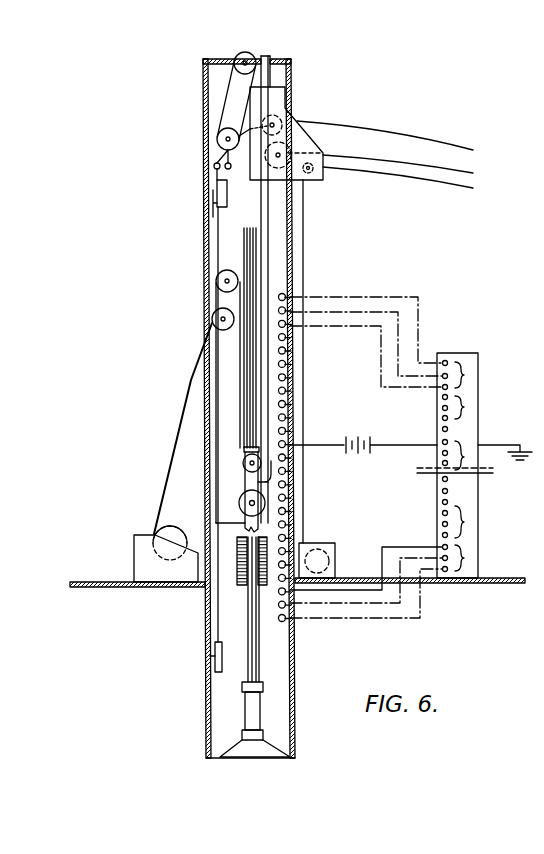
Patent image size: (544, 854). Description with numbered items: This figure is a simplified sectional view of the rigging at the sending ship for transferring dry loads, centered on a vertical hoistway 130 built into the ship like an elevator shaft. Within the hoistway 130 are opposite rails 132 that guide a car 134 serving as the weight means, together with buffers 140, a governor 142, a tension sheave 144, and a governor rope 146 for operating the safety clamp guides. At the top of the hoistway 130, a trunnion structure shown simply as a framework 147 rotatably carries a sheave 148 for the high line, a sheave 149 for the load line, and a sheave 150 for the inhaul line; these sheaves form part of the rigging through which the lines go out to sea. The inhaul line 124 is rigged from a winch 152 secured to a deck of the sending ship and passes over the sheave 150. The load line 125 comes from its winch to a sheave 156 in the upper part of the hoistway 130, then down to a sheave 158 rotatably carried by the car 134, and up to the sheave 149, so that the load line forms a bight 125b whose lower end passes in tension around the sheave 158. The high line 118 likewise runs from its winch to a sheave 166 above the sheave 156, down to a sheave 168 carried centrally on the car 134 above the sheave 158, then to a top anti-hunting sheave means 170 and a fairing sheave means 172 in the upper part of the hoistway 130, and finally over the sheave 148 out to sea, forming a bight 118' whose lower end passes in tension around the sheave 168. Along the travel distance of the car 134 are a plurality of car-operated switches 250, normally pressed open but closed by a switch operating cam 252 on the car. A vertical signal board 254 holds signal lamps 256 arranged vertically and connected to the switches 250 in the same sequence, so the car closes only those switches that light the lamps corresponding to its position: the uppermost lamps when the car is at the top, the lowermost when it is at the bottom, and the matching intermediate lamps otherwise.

The high line 118 is at (385, 131).
The bight of the high line 118' is at (206, 370).
The inhaul line 124 is at (436, 185).
The load line 125 is at (433, 171).
The bight of the load line 125b is at (304, 231).
The hoistway 130 is at (188, 308).
The rails 132 is at (243, 250).
The car 134 is at (245, 584).
The buffers 140 is at (247, 706).
The governor 142 is at (214, 168).
The tension sheave 144 is at (212, 662).
The governor rope 146 is at (206, 237).
The framework 147 is at (283, 95).
The sheave for the high line 148 is at (292, 124).
The sheave for the load line 149 is at (304, 124).
The sheave for the inhaul line 150 is at (309, 176).
The winch 152 is at (330, 548).
The sheave 156 is at (212, 322).
The sheave 158 is at (239, 505).
The sheave 166 is at (216, 283).
The sheave 168 is at (243, 463).
The anti-hunting sheave means 170 is at (235, 54).
The fairing sheave means 172 is at (217, 138).
The car-operated switches 250 is at (290, 390).
The switch operating cam 252 is at (276, 477).
The signal board 254 is at (478, 507).
The signal lamps 256 is at (442, 442).